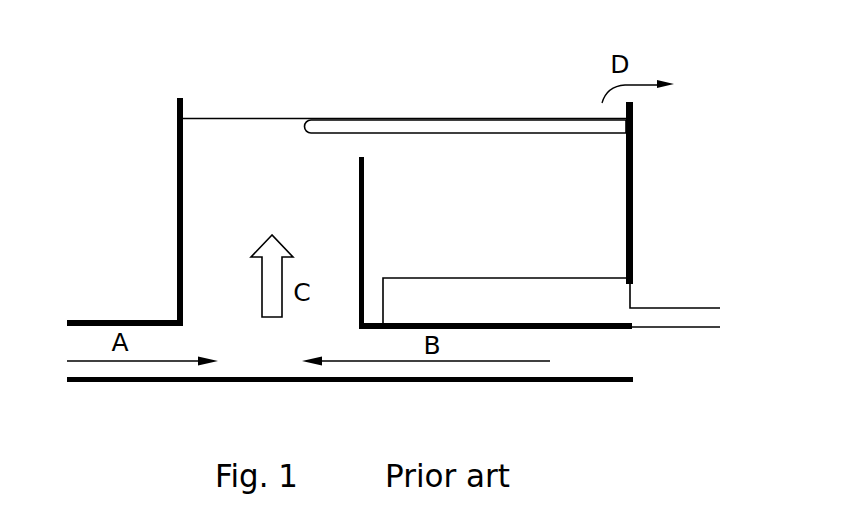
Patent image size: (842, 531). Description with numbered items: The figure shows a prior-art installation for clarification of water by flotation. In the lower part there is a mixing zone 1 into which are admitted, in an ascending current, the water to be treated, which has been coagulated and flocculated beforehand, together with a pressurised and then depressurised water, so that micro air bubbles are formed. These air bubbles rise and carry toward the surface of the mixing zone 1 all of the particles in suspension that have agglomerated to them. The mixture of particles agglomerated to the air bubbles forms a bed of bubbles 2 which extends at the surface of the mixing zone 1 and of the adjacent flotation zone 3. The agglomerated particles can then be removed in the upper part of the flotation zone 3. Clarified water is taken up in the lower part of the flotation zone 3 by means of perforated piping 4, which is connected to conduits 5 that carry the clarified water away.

The mixing zone 1 is at (228, 216).
The bed of bubbles 2 is at (433, 125).
The flotation zone 3 is at (603, 200).
The perforated piping 4 is at (565, 307).
The conduits 5 is at (677, 318).